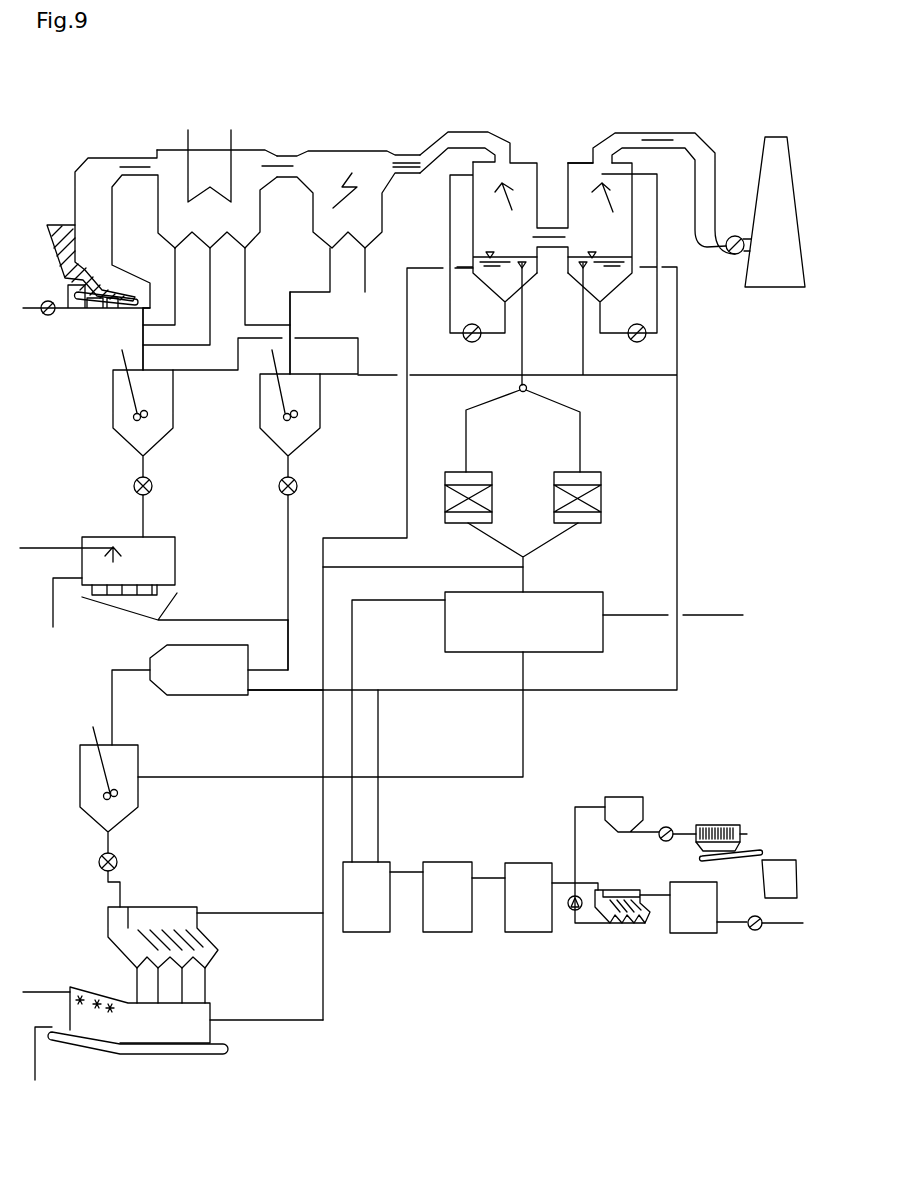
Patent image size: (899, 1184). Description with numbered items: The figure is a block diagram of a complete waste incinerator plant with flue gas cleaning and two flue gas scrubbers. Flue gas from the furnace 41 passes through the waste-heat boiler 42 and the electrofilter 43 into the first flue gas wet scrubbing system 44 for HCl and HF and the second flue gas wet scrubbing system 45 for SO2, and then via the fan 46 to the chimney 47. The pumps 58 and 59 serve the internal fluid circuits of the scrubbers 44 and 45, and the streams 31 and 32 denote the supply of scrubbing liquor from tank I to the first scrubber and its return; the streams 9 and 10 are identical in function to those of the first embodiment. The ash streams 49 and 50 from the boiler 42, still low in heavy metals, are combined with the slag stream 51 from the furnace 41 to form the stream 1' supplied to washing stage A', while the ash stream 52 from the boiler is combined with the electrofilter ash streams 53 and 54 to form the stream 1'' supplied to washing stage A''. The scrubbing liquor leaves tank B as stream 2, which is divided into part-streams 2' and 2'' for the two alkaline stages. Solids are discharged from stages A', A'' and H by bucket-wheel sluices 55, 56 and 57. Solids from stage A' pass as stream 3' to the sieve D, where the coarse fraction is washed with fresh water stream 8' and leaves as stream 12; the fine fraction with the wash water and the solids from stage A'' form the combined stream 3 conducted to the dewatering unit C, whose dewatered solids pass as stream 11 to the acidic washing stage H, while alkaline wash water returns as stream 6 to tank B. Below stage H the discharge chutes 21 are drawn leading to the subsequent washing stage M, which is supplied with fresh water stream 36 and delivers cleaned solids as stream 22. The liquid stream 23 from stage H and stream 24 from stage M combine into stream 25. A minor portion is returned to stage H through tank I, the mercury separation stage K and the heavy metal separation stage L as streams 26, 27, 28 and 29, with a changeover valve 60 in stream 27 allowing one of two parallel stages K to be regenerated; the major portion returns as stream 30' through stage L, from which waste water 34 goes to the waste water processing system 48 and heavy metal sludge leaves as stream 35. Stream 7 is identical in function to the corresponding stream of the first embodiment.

The furnace 41 is at (88, 195).
The waste-heat boiler 42 is at (205, 158).
The electrofilter 43 is at (346, 155).
The first flue gas wet scrubbing system 44 is at (522, 170).
The second flue gas wet scrubbing system 45 is at (578, 155).
The fan 46 is at (728, 253).
The chimney 47 is at (767, 162).
The scrubbing liquor supply stream 31 is at (450, 217).
The scrubbing liquor return stream 32 is at (510, 212).
The stream 10 is at (611, 211).
The stream 9 is at (662, 218).
The circulation stream 27 is at (523, 330).
The pump 58 is at (460, 338).
The pump 59 is at (630, 336).
The scrubbing liquor stream 2 is at (462, 476).
The slag stream 51 is at (142, 310).
The ash stream 49 is at (173, 262).
The ash stream 50 is at (210, 290).
The ash stream 52 is at (247, 284).
The ash stream 53 is at (330, 263).
The ash stream 54 is at (377, 260).
The slag stream 1' is at (168, 339).
The ash stream 1'' is at (310, 333).
The part-stream 2' is at (227, 375).
The part-stream 2'' is at (337, 376).
The washing stage A' is at (172, 413).
The washing stage A'' is at (320, 413).
The bucket-wheel sluice 55 is at (152, 484).
The bucket-wheel sluice 56 is at (297, 482).
The solids stream 3' is at (169, 516).
The circulation stream 26 is at (407, 403).
The changeover valve 60 is at (523, 429).
The mercury separation stage K is at (490, 498).
The circulation stream 28 is at (525, 560).
The return stream 30' is at (423, 551).
The heavy metal separation stage L is at (570, 600).
The waste water stream 34 is at (398, 602).
The heavy metal sludge stream 35 is at (638, 612).
The circulation stream 29 is at (525, 735).
The stream 7 is at (380, 730).
The sieve D is at (185, 578).
The fresh water stream 8' is at (66, 528).
The coarse fraction stream 12 is at (48, 602).
The dewatering unit C is at (215, 690).
The dewatered solids stream 11 is at (127, 668).
The combined stream 3 is at (268, 645).
The return stream 6 is at (283, 690).
The washing stage H is at (168, 912).
The bucket-wheel sluice 57 is at (117, 860).
The combined liquid stream 25 is at (320, 818).
The liquid stream 23 is at (275, 912).
The discharge chutes 21 is at (183, 980).
The subsequent washing stage M is at (193, 1040).
The fresh water stream 36 is at (40, 990).
The cleaned solids stream 22 is at (37, 1057).
The liquid stream 24 is at (323, 978).
The waste water processing system 48 is at (492, 930).